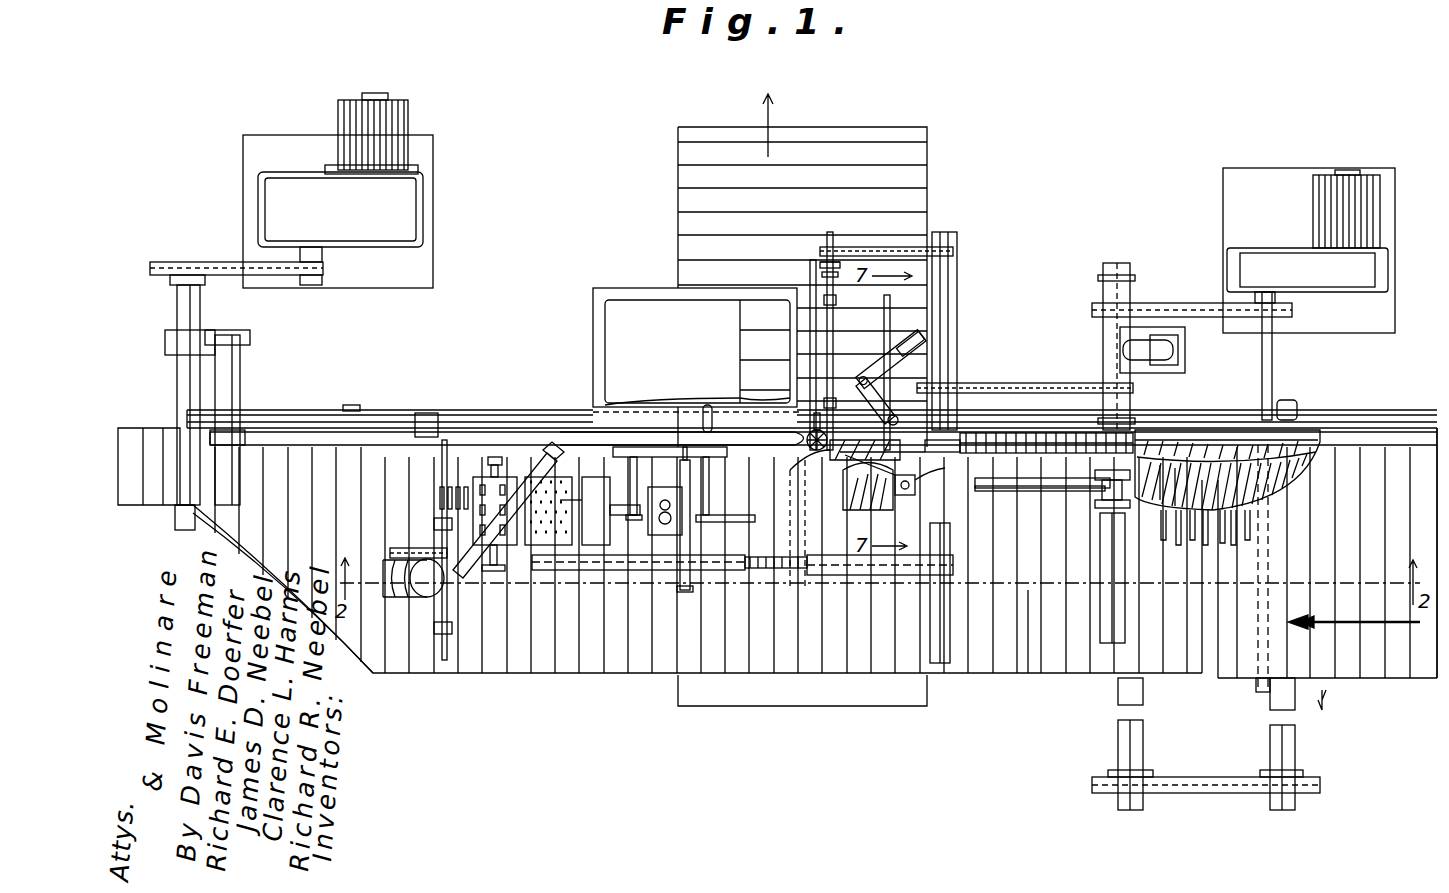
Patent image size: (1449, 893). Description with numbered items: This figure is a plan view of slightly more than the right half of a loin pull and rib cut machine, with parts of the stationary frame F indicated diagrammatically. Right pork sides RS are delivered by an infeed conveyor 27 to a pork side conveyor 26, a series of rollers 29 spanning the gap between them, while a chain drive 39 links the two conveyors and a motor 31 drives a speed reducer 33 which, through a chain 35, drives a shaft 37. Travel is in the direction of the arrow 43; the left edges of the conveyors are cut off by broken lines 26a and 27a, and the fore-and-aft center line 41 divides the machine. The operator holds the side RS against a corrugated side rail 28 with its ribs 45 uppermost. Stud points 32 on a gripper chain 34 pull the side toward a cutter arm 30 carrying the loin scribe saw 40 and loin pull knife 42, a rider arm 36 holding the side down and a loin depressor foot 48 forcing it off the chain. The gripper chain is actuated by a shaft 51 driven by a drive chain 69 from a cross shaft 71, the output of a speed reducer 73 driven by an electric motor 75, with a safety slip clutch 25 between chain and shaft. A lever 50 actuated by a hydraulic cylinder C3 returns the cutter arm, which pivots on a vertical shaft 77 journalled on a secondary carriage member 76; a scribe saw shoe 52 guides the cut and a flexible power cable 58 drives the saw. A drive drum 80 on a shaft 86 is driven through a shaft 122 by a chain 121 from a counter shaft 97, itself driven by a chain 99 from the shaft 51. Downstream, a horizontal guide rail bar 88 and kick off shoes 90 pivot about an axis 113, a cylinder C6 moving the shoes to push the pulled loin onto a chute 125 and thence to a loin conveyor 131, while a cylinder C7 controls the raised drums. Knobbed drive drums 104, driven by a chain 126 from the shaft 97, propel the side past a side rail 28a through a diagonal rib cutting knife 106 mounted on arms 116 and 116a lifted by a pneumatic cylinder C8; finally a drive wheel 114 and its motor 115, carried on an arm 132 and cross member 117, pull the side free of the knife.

The safety slip clutch 25 is at (1100, 308).
The pork side conveyor 26 is at (300, 450).
The broken line 26a is at (618, 678).
The infeed conveyor 27 is at (1428, 428).
The broken line 27a is at (1322, 712).
The side rail 28 is at (1338, 432).
The side rail 28a is at (618, 420).
The rollers 29 is at (1190, 540).
The cutter arm 30 is at (840, 478).
The motor 31 is at (398, 140).
The stud points 32 is at (1010, 440).
The speed reducer 33 is at (270, 210).
The gripper chain 34 is at (1055, 460).
The chain 35 is at (228, 275).
The gripper chain rider arm 36 is at (1030, 490).
The shaft 37 is at (177, 380).
The chain drive 39 is at (1215, 752).
The loin scribe saw 40 is at (905, 490).
The center line 41 is at (1030, 588).
The loin pull knife 42 is at (826, 576).
The arrow 43 is at (1340, 628).
The ribs 45 is at (1172, 490).
The loin depressor foot 48 is at (940, 440).
The lever 50 is at (862, 398).
The shaft 51 is at (1125, 290).
The scribe saw shoe 52 is at (915, 485).
The flexible power cable 58 is at (918, 492).
The drive chain 69 is at (1175, 303).
The cross shaft 71 is at (1272, 368).
The speed reducer 73 is at (1322, 290).
The electric motor 75 is at (1318, 205).
The secondary carriage member 76 is at (890, 310).
The vertical shaft 77 is at (870, 432).
The drive drum 80 is at (835, 470).
The shaft 86 is at (812, 355).
The horizontal guide rail bar 88 is at (748, 410).
The kick off shoes 90 is at (745, 515).
The counter shaft 97 is at (958, 330).
The chain 99 is at (1010, 383).
The knobbed drive drums 104 is at (535, 548).
The rib cutting knife 106 is at (478, 555).
The axis 113 is at (722, 457).
The drive wheel 114 is at (446, 487).
The drive motor 115 is at (432, 585).
The arm 116 is at (585, 440).
The arm 116a is at (628, 570).
The cross member 117 is at (430, 420).
The chain 121 is at (905, 247).
The shaft 122 is at (870, 208).
The chute 125 is at (695, 347).
The chain 126 is at (768, 572).
The loin conveyor 131 is at (828, 145).
The arm 132 is at (392, 412).
The hydraulic cylinder C3 is at (880, 368).
The cylinder C6 is at (690, 545).
The cylinder C7 is at (660, 535).
The pneumatic cylinder C8 is at (610, 510).
The stationary frame F is at (596, 368).
The frame member F' is at (733, 338).
The right pork side RS is at (1255, 402).